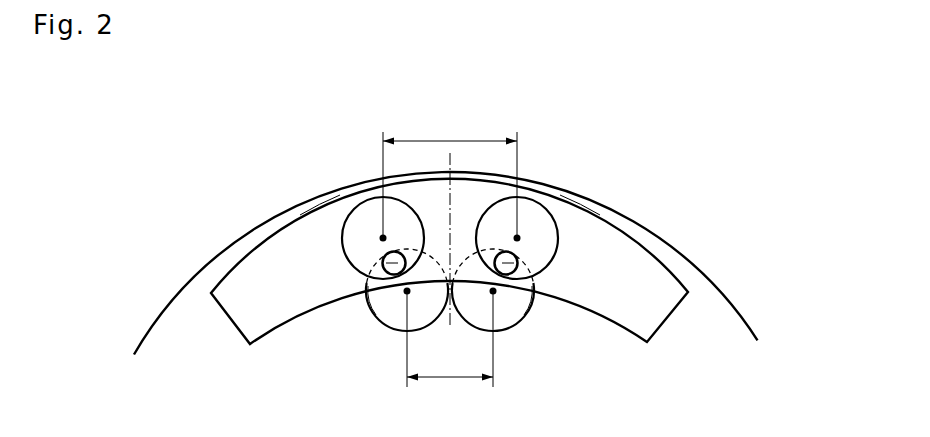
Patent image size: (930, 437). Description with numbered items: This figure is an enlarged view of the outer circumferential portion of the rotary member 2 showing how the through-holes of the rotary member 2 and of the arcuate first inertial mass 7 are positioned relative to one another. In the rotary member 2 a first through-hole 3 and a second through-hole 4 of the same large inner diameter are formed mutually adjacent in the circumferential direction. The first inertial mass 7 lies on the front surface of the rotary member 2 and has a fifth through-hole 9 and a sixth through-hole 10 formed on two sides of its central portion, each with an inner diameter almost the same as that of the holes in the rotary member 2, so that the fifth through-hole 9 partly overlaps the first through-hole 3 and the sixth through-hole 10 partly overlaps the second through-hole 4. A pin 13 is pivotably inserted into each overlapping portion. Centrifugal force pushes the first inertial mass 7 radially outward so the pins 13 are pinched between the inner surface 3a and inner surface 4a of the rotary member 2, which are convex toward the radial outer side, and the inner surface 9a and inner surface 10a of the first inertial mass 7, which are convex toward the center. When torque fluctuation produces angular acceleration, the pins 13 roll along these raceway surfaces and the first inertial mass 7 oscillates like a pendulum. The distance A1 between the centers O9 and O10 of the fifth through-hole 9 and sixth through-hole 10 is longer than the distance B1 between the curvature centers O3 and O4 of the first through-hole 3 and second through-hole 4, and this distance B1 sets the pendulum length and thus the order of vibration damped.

The rotary member 2 is at (712, 298).
The first inertial mass 7 is at (640, 258).
The pin 13 is at (393, 262).
The fifth through-hole 9 is at (363, 215).
The sixth through-hole 10 is at (537, 213).
The center of the fifth through-hole O9 is at (381, 233).
The center of the sixth through-hole O10 is at (519, 233).
The distance between centers O9 and O10 A1 is at (450, 178).
The inner surface of the fifth through-hole 9a is at (404, 256).
The inner surface of the sixth through-hole 10a is at (496, 256).
The first through-hole 3 is at (390, 313).
The second through-hole 4 is at (512, 313).
The inner surface of the first through-hole 3a is at (370, 311).
The inner surface of the second through-hole 4a is at (530, 311).
The curvature center of the first through-hole O3 is at (407, 294).
The curvature center of the second through-hole O4 is at (493, 294).
The distance between curvature centers O3 and O4 B1 is at (450, 339).